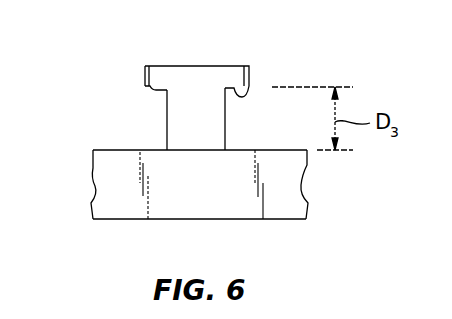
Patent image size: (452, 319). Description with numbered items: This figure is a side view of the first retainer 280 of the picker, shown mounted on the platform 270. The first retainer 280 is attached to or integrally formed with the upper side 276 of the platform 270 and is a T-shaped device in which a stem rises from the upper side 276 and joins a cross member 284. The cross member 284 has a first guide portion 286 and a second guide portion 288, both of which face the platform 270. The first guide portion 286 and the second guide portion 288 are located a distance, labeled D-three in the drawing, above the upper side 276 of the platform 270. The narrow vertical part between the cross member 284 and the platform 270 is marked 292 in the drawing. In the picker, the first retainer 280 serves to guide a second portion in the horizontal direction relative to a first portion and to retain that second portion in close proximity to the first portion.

The platform 270 is at (156, 172).
The upper side 276 is at (106, 150).
The first retainer 280 is at (189, 82).
The cross member 284 is at (195, 75).
The first guide portion 286 is at (150, 88).
The second guide portion 288 is at (249, 89).
The stem of post 292 is at (182, 122).